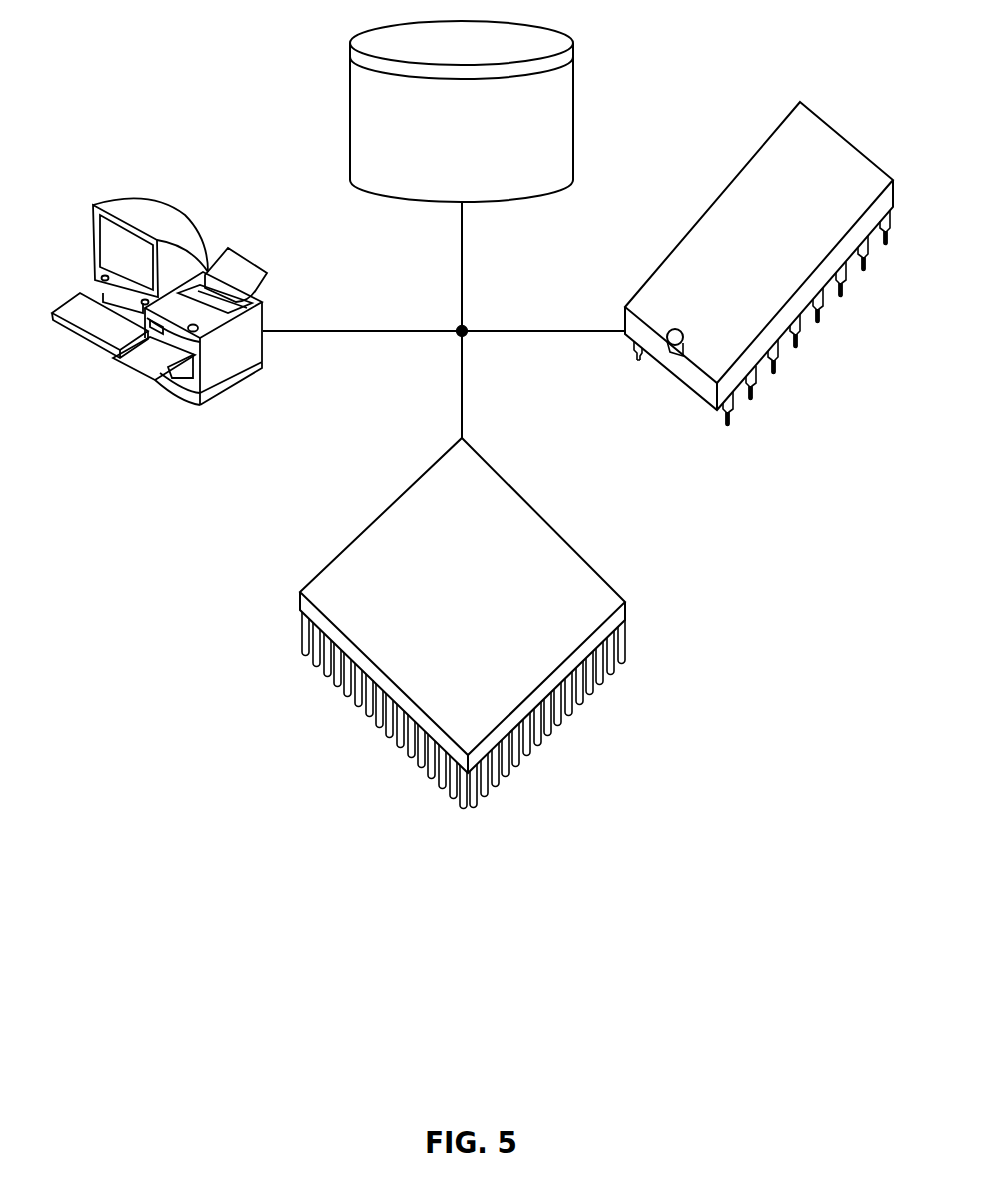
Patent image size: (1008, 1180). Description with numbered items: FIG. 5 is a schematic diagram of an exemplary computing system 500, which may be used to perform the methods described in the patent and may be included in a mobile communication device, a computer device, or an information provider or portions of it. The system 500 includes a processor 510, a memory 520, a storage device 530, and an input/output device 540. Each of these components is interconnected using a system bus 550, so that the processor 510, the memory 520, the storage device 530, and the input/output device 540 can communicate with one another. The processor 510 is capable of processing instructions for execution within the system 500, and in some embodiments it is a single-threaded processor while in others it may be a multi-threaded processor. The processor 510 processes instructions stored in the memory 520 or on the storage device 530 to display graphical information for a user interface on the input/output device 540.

The computing system 500 is at (168, 759).
The processor 510 is at (378, 515).
The memory 520 is at (709, 205).
The storage device 530 is at (348, 110).
The input/output device 540 is at (93, 204).
The system bus 550 is at (393, 331).